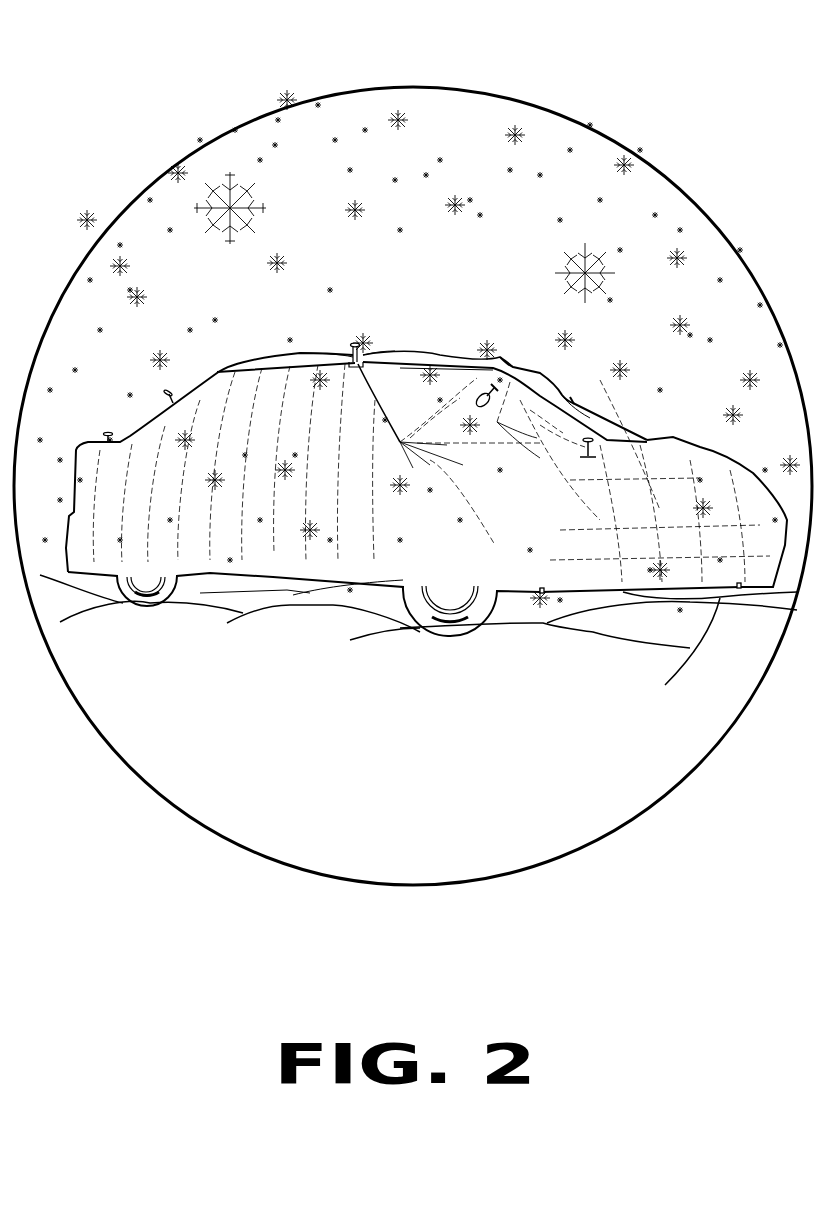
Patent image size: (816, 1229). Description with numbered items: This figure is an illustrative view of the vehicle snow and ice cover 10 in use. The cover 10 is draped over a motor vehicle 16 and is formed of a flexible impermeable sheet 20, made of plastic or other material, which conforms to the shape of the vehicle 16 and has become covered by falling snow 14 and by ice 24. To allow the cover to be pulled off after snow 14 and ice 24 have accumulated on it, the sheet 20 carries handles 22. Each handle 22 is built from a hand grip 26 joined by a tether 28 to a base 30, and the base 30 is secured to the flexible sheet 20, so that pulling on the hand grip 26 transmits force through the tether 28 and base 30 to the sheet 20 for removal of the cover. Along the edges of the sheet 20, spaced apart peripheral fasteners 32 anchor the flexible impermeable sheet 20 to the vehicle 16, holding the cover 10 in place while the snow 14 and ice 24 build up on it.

The snow and ice cover 10 is at (674, 103).
The snow 14 is at (528, 378).
The motor vehicle 16 is at (490, 603).
The flexible impermeable sheet 20 is at (340, 563).
The handles 22 is at (356, 332).
The ice 24 is at (562, 388).
The hand grip 26 is at (354, 344).
The tether 28 is at (353, 362).
The base 30 is at (365, 353).
The peripheral fasteners 32 is at (738, 588).